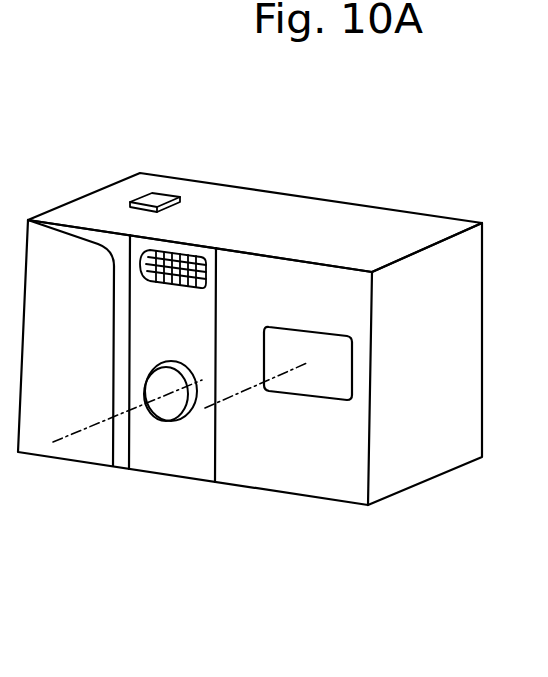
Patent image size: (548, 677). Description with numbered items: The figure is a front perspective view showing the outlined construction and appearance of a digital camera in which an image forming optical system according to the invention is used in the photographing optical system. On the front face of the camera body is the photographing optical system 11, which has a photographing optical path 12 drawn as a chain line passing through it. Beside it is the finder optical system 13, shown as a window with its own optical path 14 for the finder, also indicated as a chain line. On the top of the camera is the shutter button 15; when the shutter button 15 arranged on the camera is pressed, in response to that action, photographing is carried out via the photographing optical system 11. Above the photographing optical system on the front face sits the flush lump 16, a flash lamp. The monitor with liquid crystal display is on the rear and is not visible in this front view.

The photographing optical system 11 is at (177, 410).
The photographing optical path 12 is at (105, 427).
The finder optical system 13 is at (332, 372).
The optical path for finder 14 is at (244, 394).
The shutter button 15 is at (160, 196).
The flush lump 16 is at (170, 250).